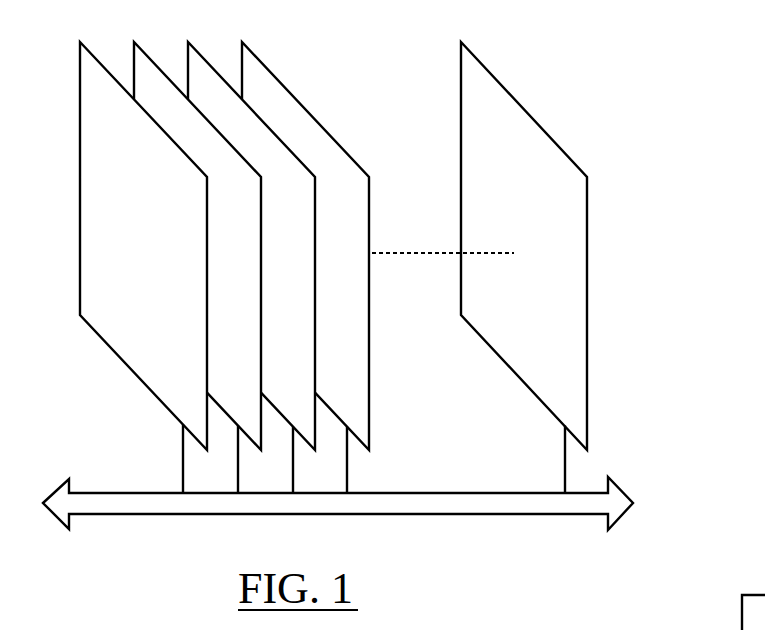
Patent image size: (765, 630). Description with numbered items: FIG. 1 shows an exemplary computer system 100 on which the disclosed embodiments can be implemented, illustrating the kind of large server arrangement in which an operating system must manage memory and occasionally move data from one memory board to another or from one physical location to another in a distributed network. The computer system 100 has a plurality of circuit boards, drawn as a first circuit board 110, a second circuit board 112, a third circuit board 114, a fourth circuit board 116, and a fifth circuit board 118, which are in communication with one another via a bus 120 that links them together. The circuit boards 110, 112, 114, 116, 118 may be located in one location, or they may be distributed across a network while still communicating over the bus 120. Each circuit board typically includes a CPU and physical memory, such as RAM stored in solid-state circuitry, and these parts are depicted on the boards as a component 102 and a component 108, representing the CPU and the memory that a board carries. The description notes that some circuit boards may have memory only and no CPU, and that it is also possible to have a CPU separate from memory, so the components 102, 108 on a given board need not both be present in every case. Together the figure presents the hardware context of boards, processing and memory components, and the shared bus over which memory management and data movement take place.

The computer system 100 is at (663, 88).
The circuit board 110 is at (160, 254).
The circuit board 112 is at (252, 254).
The circuit board 114 is at (307, 254).
The circuit board 116 is at (363, 254).
The circuit board 118 is at (535, 226).
The bus 120 is at (556, 515).
The component 102 is at (742, 612).
The component 108 is at (685, 622).